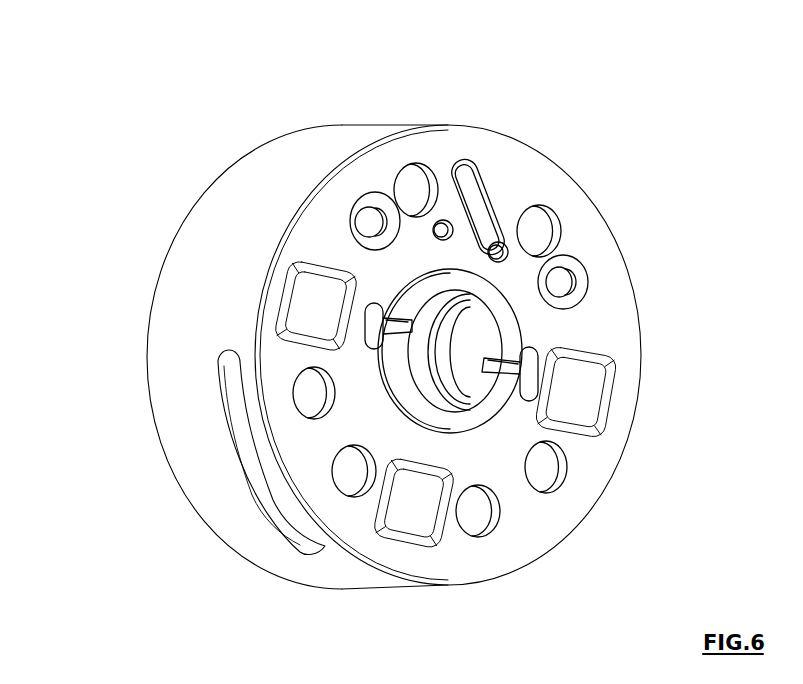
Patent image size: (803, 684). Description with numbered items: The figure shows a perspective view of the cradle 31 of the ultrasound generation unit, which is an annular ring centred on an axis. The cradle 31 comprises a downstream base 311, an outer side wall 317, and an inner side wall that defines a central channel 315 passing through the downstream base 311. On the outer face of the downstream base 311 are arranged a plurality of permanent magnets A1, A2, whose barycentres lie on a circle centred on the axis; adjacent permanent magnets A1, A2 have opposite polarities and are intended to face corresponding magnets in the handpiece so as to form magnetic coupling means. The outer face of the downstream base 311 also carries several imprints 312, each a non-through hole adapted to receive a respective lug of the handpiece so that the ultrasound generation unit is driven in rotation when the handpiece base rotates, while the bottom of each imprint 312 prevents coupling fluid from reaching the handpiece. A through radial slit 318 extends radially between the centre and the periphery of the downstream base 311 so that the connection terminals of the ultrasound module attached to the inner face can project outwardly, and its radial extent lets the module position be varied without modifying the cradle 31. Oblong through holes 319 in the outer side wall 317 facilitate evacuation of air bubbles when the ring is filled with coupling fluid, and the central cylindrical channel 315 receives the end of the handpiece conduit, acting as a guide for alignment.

The cradle 31 is at (197, 78).
The downstream base 311 is at (615, 330).
The imprint 312 is at (313, 308).
The central channel 315 is at (482, 333).
The outer side wall 317 is at (233, 188).
The radial slit 318 is at (470, 212).
The through hole 319 is at (295, 518).
The permanent magnet A1 is at (412, 190).
The permanent magnet A2 is at (537, 233).